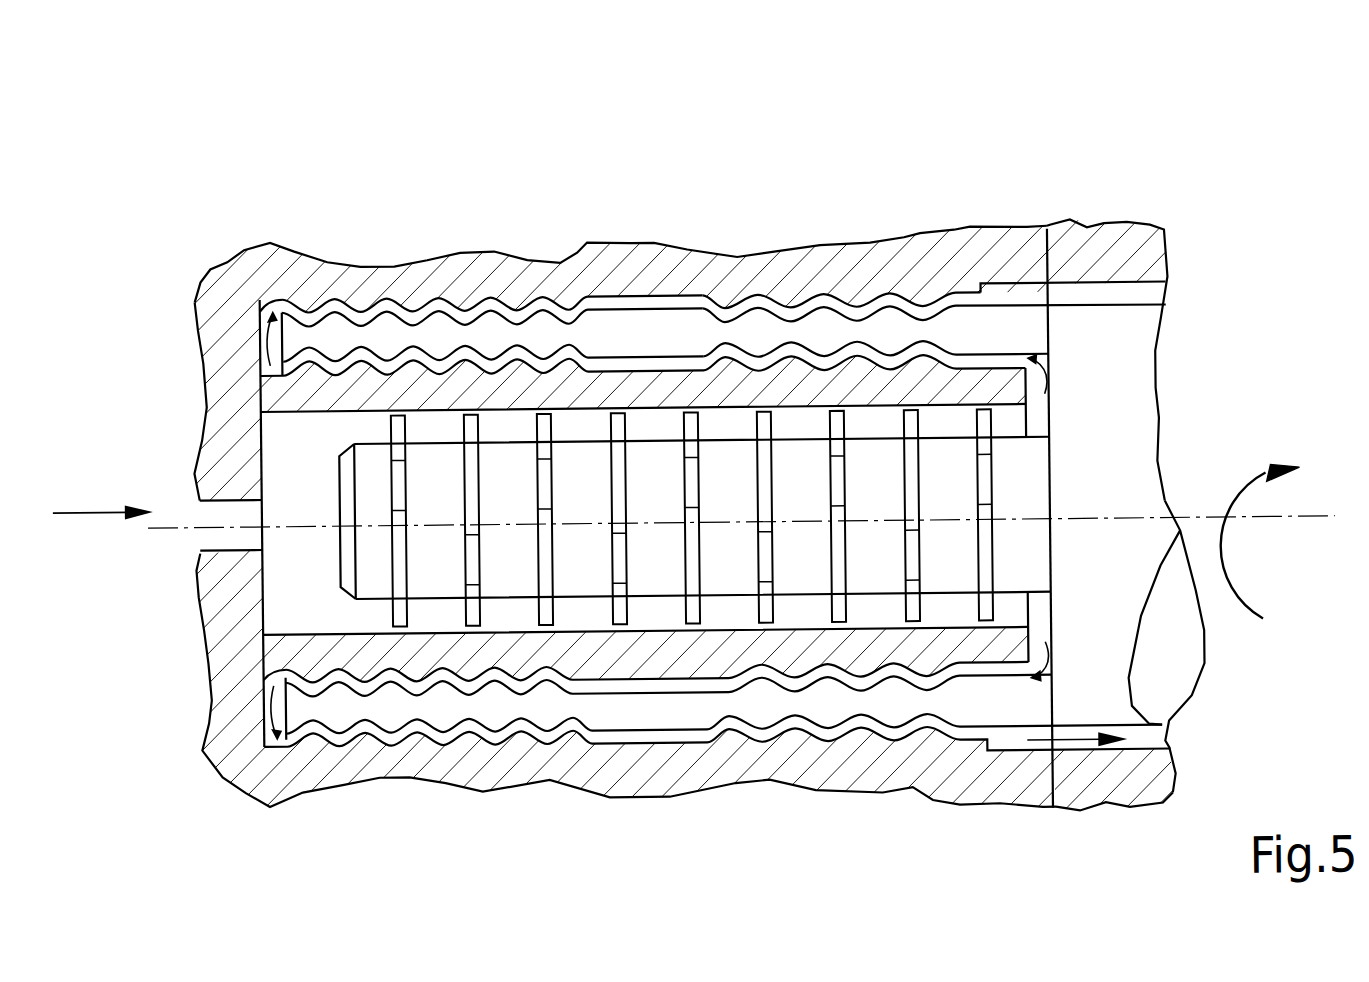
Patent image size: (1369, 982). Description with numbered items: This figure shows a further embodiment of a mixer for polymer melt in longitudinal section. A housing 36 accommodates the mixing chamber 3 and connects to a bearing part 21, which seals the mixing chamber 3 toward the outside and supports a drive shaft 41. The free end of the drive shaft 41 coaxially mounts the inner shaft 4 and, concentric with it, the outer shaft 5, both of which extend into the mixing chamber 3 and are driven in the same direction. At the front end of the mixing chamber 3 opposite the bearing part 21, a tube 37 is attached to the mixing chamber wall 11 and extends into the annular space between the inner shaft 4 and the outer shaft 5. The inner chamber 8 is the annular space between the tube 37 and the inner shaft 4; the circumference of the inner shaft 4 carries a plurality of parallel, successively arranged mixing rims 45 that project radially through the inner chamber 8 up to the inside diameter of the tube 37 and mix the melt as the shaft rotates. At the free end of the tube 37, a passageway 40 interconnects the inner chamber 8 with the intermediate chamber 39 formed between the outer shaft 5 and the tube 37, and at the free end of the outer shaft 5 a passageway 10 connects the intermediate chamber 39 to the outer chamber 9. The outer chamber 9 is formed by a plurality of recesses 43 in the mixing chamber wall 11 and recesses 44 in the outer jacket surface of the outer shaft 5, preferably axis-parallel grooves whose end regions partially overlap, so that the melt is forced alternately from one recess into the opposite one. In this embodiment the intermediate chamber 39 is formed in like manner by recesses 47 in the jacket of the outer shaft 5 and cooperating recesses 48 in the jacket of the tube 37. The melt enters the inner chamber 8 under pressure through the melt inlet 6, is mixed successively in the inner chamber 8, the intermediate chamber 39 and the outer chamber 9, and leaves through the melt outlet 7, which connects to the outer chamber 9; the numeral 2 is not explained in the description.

The outlet channel 2 is at (1010, 748).
The mixing chamber 3 is at (260, 693).
The inner shaft 4 is at (870, 562).
The outer shaft 5 is at (876, 343).
The melt inlet 6 is at (218, 520).
The melt outlet 7 is at (1019, 303).
The inner chamber 8 is at (574, 430).
The outer chamber 9 is at (479, 312).
The passageway 10 is at (272, 337).
The mixing chamber wall 11 is at (324, 301).
The bearing part 21 is at (1133, 257).
The housing 36 is at (381, 276).
The tube 37 is at (271, 400).
The intermediate chamber 39 is at (455, 339).
The passageway 40 is at (1052, 384).
The drive shaft 41 is at (1129, 439).
The recesses 43 is at (950, 315).
The recesses 44 is at (849, 339).
The mixing rims 45 is at (616, 629).
The recesses 47 is at (855, 696).
The recesses 48 is at (757, 672).